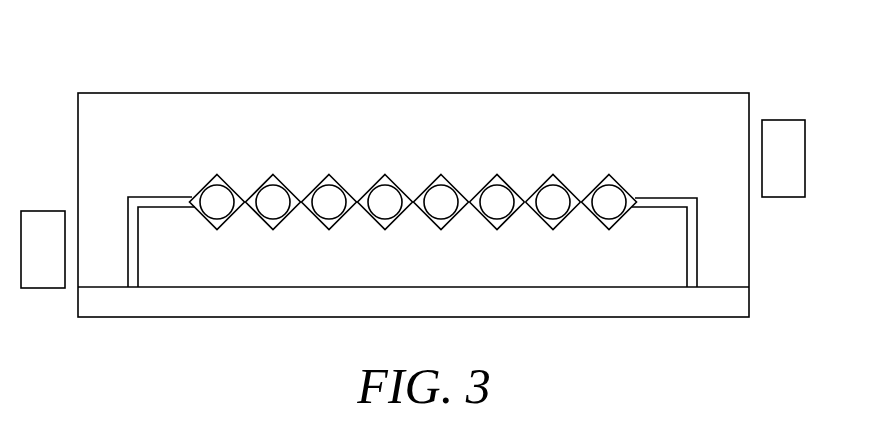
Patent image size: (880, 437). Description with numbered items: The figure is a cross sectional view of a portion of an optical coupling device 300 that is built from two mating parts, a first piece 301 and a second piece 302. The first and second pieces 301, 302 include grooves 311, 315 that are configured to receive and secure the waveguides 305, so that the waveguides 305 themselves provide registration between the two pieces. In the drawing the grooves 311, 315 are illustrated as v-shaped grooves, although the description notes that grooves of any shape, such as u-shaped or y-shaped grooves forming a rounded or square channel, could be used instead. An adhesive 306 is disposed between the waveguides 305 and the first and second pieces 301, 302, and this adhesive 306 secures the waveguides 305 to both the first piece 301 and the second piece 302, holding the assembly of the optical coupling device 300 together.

The optical coupling device 300 is at (150, 30).
The first piece 301 is at (639, 255).
The second piece 302 is at (711, 115).
The waveguides 305 is at (610, 198).
The adhesive 306 is at (441, 175).
The grooves 311 is at (568, 217).
The grooves 315 is at (545, 183).